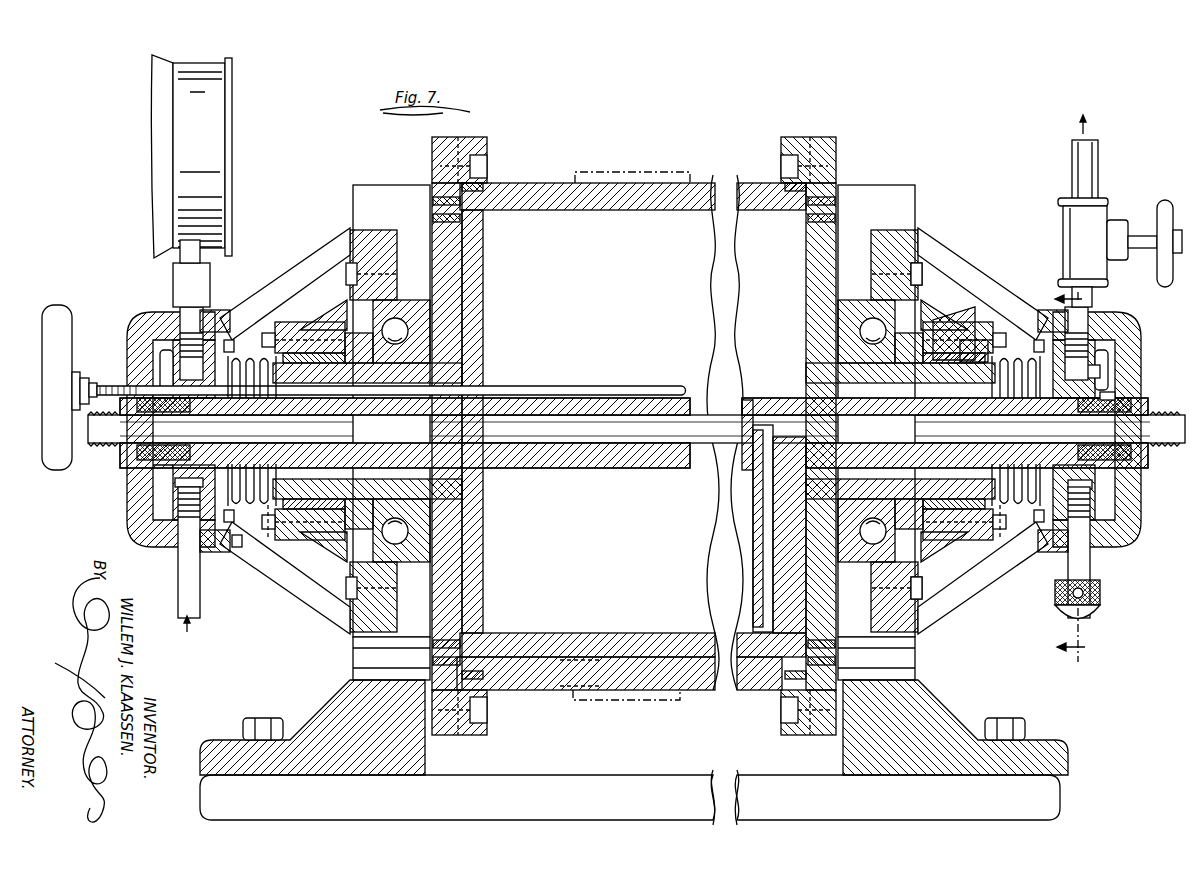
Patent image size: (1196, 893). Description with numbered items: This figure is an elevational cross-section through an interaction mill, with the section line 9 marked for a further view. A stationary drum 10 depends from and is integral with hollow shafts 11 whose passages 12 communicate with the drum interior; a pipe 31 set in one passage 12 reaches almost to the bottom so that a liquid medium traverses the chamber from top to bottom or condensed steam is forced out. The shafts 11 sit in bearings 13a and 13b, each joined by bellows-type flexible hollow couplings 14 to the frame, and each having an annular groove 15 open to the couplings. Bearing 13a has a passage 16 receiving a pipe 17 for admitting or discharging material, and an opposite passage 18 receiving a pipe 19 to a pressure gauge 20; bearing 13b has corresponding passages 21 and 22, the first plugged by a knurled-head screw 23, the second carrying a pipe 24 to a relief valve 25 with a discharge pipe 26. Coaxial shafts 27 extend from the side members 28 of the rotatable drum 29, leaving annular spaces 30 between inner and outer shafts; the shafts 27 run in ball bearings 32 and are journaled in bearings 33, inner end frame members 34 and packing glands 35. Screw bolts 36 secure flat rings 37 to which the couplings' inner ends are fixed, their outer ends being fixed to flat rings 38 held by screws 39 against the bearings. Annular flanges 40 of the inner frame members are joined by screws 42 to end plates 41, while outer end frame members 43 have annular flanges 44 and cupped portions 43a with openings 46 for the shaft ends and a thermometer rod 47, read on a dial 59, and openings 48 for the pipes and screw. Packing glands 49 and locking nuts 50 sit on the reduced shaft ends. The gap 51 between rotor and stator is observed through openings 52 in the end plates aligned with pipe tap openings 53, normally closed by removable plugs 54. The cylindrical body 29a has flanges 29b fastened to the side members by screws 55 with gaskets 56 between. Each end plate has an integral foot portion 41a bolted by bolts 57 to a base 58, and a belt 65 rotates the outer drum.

The section line 9- 9 is at (1061, 476).
The stationary drum 10 is at (575, 640).
The hollow shaft 11 is at (92, 450).
The passage 12 is at (497, 470).
The bearing 13a is at (160, 370).
The bearing 13b is at (1100, 378).
The flexible hollow coupling 14 is at (252, 502).
The annular groove 15 is at (226, 540).
The passage 16 is at (178, 486).
The pipe 17 is at (180, 603).
The passage 18 is at (160, 325).
The pipe 19 is at (217, 308).
The pressure gauge 20 is at (154, 177).
The passage 21 is at (1092, 486).
The passage 22 is at (1100, 368).
The knurled-head screw 23 is at (1092, 573).
The pipe 24 is at (1092, 297).
The relief valve 25 is at (1063, 237).
The discharge pipe 26 is at (1098, 177).
The shaft 27 is at (300, 487).
The side member 28 is at (460, 265).
The rotatable drum 29 is at (552, 190).
The cylindrical body 29a is at (532, 693).
The flange 29b is at (485, 735).
The annular space 30 is at (315, 492).
The pipe 31 is at (753, 520).
The ball bearing 32 is at (380, 528).
The bearing 33 is at (335, 508).
The inner end frame member 34 is at (960, 345).
The packing gland 35 is at (945, 340).
The screw bolt 36 is at (263, 532).
The flat ring 37 is at (272, 532).
The flat ring 38 is at (237, 547).
The screw 39 is at (1040, 318).
The annular flange 40 is at (347, 612).
The end plate 41 is at (390, 232).
The foot portion 41a is at (232, 745).
The screw 42 is at (922, 283).
The outer end frame member 43 is at (252, 284).
The cupped portion 43a is at (1135, 530).
The annular flange 44 is at (352, 235).
The opening 46 is at (135, 478).
The thermometer rod 47 is at (92, 385).
The opening 48 is at (180, 320).
The packing gland 49 is at (1110, 398).
The locking nut 50 is at (137, 460).
The gap 51 is at (590, 685).
The opening 52 is at (940, 700).
The pipe tap opening 53 is at (462, 225).
The removable plug 54 is at (483, 195).
The screw 55 is at (487, 165).
The gasket 56 is at (458, 140).
The bolt 57 is at (275, 722).
The base 58 is at (1060, 813).
The dial 59 is at (60, 310).
The belt 65 is at (600, 172).